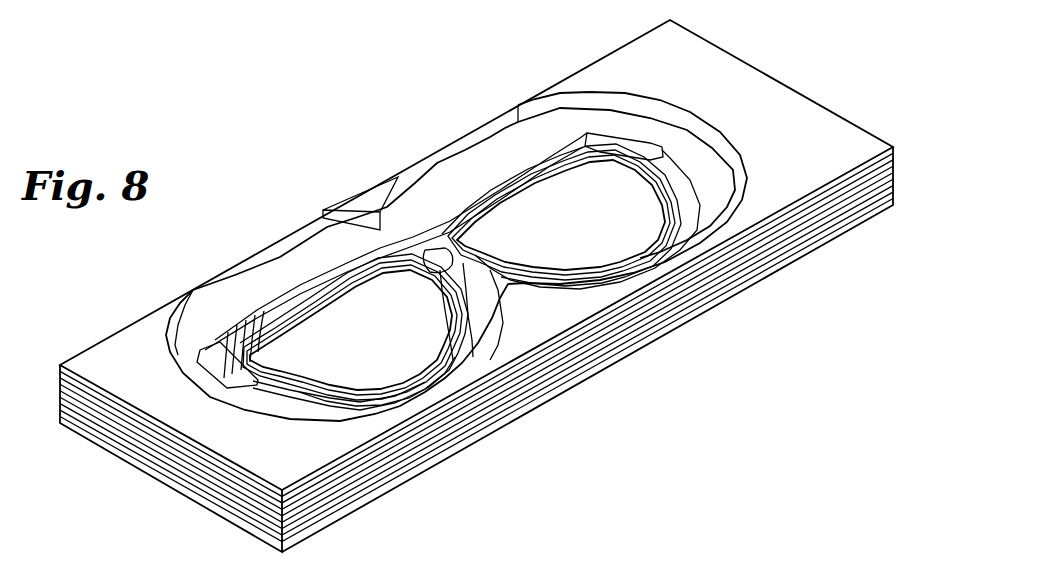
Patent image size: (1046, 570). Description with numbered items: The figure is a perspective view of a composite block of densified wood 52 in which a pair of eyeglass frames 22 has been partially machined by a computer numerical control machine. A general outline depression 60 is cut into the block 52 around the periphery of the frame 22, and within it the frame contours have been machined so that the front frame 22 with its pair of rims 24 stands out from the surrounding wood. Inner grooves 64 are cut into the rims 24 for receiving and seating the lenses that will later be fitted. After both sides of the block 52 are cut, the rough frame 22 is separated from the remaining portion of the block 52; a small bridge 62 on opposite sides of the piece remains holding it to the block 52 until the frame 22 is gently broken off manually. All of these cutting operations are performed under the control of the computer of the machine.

The block of wood 52 is at (776, 78).
The general outline depression 60 is at (196, 290).
The small bridge 62 is at (200, 347).
The front frame 22 is at (516, 172).
The inner grooves 64 is at (306, 310).
The rims 24 is at (417, 387).